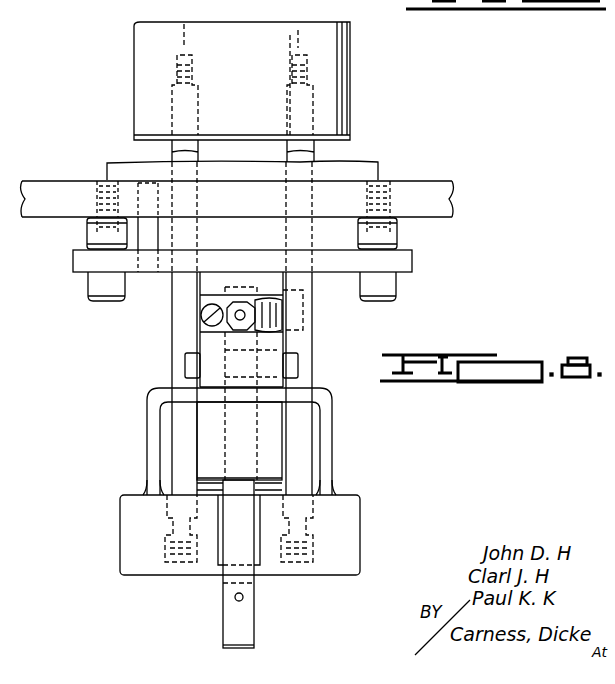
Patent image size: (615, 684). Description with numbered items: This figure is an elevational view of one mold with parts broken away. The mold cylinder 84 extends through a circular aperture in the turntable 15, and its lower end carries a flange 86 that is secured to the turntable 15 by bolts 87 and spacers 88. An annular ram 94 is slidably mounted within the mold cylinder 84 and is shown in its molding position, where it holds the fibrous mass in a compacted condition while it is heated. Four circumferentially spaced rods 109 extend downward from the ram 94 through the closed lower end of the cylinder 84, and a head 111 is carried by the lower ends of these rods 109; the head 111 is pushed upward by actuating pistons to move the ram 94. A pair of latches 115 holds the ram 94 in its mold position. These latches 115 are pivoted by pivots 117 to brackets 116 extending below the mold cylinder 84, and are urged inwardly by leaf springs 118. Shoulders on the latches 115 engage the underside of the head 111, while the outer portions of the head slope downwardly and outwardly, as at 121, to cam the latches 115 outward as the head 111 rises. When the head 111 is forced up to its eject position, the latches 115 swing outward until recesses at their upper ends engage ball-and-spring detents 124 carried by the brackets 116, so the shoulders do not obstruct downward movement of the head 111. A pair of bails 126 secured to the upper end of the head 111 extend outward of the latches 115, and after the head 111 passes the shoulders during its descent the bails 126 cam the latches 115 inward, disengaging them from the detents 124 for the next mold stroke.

The turntable 15 is at (435, 175).
The mold cylinder 84 is at (115, 170).
The flange 86 is at (414, 265).
The bolts 87 is at (92, 284).
The spacers 88 is at (90, 235).
The annular ram 94 is at (340, 78).
The rods 109 is at (180, 312).
The head 111 is at (340, 535).
The latches 115 is at (244, 618).
The brackets 116 is at (233, 280).
The pivots 117 is at (300, 368).
The leaf springs 118 is at (212, 417).
The sloping outer portion 121 is at (218, 542).
The ball-and-spring detents 124 is at (272, 305).
The bails 126 is at (330, 433).